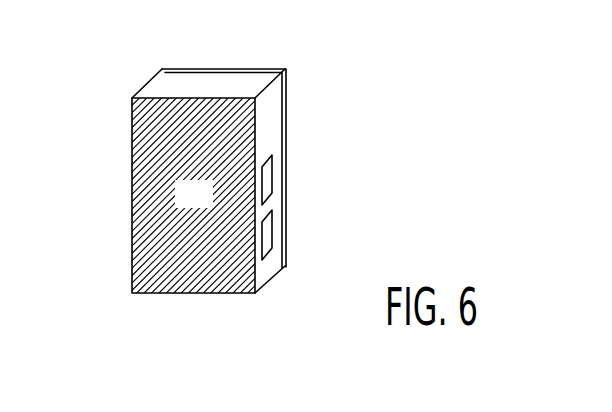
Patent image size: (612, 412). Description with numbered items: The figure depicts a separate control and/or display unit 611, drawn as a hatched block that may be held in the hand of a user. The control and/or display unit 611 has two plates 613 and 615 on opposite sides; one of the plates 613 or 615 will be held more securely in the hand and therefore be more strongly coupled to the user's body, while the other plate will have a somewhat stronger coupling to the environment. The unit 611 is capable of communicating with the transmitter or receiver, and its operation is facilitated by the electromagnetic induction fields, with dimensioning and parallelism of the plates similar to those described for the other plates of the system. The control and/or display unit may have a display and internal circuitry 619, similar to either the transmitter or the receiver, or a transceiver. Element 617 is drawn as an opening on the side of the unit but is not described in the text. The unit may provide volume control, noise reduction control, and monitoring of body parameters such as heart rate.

The control and/or display unit 611 is at (233, 294).
The plate 613 is at (255, 132).
The plate 615 is at (265, 70).
The upper opening 617 is at (268, 180).
The internal circuitry 619 is at (268, 237).